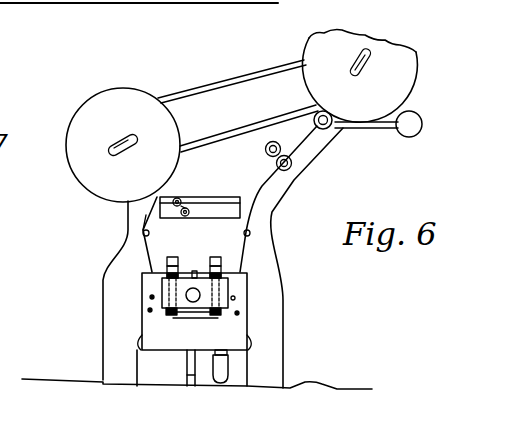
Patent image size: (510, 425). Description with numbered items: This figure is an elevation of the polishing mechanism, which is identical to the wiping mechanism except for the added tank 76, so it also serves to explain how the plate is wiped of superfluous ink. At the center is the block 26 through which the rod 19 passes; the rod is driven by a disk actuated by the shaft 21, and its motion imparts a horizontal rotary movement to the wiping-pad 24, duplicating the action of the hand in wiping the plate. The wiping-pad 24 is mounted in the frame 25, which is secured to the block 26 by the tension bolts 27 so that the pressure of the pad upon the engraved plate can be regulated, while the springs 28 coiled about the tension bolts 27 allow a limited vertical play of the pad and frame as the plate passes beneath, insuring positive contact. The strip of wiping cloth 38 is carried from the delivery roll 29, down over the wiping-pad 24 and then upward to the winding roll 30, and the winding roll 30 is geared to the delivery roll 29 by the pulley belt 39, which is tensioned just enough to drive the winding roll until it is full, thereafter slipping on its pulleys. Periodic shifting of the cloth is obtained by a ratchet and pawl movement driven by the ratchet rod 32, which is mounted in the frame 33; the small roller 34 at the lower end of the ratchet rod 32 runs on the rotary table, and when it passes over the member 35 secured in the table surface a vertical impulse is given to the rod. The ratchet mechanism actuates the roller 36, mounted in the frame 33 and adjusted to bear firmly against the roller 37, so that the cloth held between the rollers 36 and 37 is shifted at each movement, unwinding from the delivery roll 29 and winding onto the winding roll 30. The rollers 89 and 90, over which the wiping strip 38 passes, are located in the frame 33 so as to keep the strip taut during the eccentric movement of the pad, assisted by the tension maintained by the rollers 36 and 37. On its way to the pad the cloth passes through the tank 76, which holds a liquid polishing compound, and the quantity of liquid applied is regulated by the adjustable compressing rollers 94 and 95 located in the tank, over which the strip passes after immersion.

The rod 19 is at (200, 292).
The shaft 21 is at (186, 366).
The wiping-pad 24 is at (250, 344).
The frame 25 is at (232, 325).
The block 26 is at (160, 290).
The tension bolts 27 is at (215, 257).
The springs 28 is at (215, 316).
The delivery roll 29 is at (82, 105).
The winding roll 30 is at (414, 68).
The ratchet rod 32 is at (214, 366).
The frame 33 is at (275, 199).
The roller 34 is at (220, 385).
The member 35 is at (318, 388).
The roller 36 is at (292, 164).
The roller 37 is at (270, 142).
The strip of wiping cloth 38 is at (132, 247).
The pulley belt 39 is at (207, 84).
The tank 76 is at (207, 199).
The roller 89 is at (143, 223).
The roller 90 is at (250, 234).
The adjustable compressing roller 94 is at (182, 198).
The adjustable compressing roller 95 is at (185, 214).